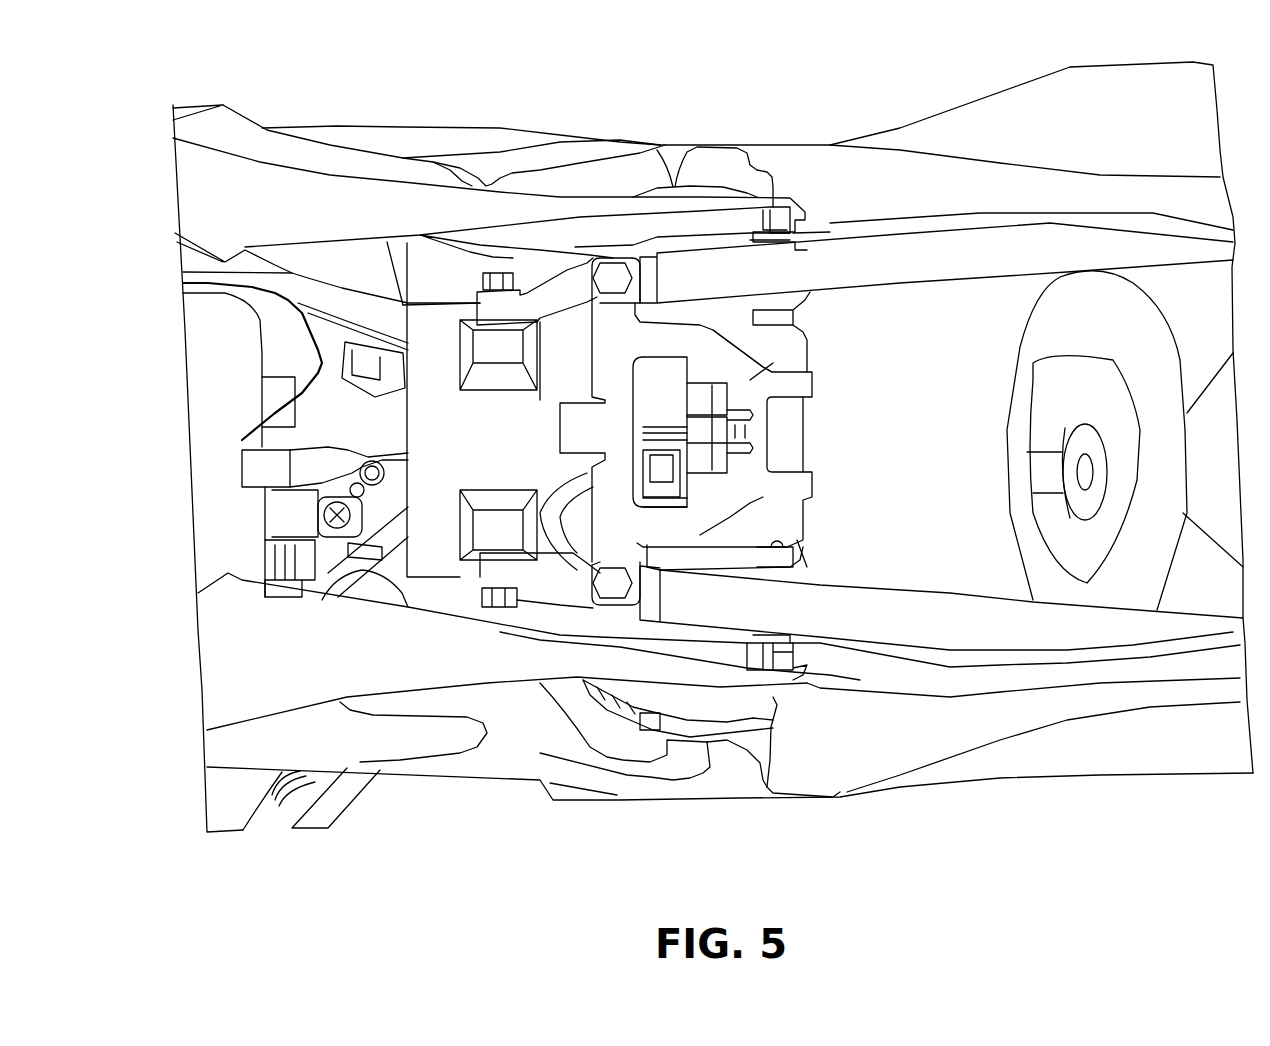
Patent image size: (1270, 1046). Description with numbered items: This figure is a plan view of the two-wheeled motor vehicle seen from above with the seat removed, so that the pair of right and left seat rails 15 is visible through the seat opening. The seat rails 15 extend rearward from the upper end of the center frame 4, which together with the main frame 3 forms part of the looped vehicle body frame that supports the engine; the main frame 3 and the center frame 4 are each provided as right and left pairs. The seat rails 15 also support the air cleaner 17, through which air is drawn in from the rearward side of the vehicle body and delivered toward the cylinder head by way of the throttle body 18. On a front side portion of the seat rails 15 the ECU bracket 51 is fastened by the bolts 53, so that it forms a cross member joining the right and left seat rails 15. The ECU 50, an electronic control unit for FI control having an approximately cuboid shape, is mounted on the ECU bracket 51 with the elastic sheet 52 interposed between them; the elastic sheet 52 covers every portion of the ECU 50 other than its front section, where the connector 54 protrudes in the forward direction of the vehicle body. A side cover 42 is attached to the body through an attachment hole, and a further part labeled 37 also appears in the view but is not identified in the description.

The main frame 3 is at (333, 157).
The center frame 4 is at (557, 157).
The seat rail 15 is at (877, 263).
The air cleaner 17 is at (970, 307).
The throttle body 18 is at (215, 471).
The bolt 37 is at (498, 272).
The side cover 42 is at (800, 167).
The ECU 50 is at (785, 522).
The ECU bracket 51 is at (750, 380).
The elastic sheet 52 is at (783, 434).
The bolts 53 is at (613, 258).
The connector 54 is at (647, 470).